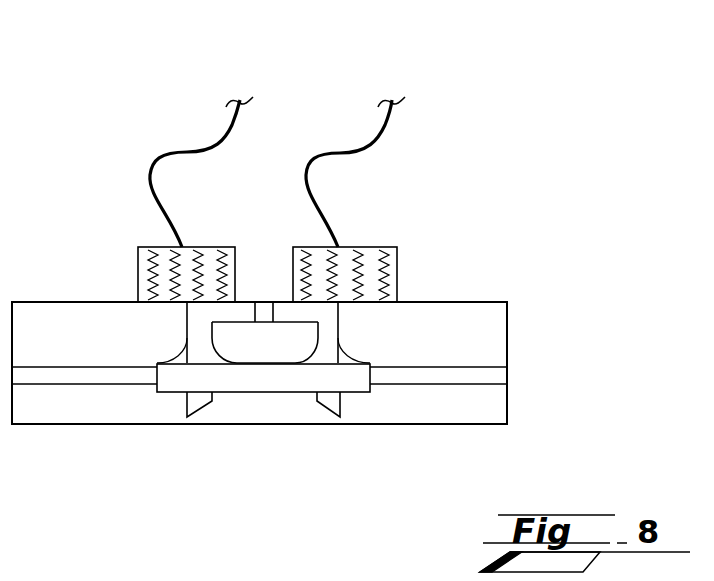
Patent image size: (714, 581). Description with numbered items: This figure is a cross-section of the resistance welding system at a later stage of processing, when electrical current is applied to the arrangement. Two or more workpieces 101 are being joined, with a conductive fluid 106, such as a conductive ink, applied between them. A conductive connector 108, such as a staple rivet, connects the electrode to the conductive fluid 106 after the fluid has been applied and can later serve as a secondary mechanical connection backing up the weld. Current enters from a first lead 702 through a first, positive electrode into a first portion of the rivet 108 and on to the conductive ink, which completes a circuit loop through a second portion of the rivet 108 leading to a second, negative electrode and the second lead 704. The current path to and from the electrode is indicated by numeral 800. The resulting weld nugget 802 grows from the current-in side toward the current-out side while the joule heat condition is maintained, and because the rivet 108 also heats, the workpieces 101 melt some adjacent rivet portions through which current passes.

The workpieces 101 is at (106, 282).
The conductive fluid 106 is at (545, 372).
The conductive connector 108 is at (342, 335).
The first lead 702 is at (190, 148).
The second lead 704 is at (363, 154).
The current path 800 is at (310, 129).
The weld nugget 802 is at (357, 425).